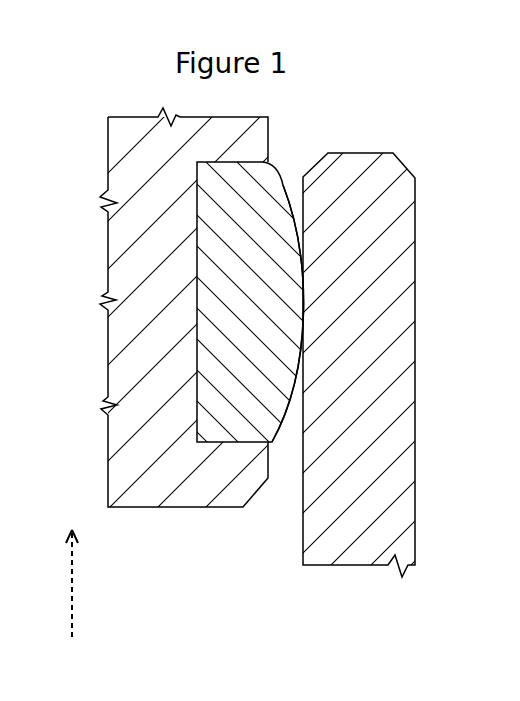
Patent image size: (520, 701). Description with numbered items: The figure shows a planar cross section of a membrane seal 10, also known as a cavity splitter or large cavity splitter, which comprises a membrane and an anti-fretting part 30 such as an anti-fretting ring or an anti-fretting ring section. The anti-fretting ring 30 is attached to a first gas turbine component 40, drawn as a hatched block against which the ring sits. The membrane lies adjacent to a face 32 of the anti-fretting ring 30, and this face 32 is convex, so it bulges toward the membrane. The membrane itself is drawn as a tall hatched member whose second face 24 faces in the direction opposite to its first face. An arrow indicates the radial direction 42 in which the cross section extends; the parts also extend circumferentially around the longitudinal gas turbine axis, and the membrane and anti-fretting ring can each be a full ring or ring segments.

The membrane seal 10 is at (378, 106).
The second face of the membrane 24 is at (417, 272).
The anti-fretting part 30 is at (210, 237).
The face of the anti-fretting ring 32 is at (283, 192).
The first gas turbine component 40 is at (185, 507).
The radial direction 42 is at (73, 578).